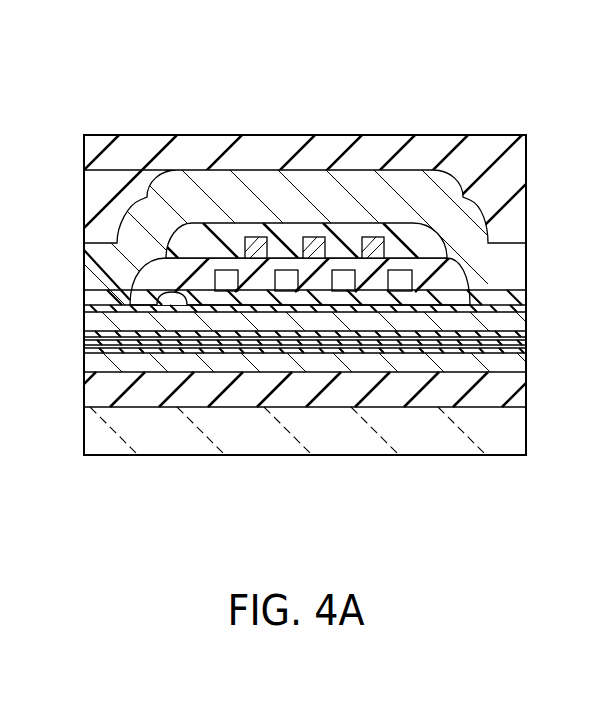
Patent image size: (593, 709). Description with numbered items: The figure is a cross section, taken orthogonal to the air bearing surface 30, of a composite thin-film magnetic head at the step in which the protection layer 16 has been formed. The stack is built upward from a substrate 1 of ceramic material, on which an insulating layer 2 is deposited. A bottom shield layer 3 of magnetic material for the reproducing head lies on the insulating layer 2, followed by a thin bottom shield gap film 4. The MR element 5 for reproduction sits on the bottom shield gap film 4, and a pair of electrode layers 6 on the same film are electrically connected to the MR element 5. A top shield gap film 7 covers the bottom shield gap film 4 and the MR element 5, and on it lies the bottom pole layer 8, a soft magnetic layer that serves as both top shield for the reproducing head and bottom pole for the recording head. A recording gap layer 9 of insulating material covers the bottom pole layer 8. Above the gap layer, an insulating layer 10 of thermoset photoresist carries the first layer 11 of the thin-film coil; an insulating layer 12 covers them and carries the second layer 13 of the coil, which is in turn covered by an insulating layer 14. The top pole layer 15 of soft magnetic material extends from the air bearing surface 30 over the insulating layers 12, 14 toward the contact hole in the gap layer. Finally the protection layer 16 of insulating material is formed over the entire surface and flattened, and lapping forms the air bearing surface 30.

The substrate 1 is at (407, 440).
The insulating layer 2 is at (440, 400).
The bottom shield layer 3 is at (492, 367).
The bottom shield gap film 4 is at (317, 350).
The MR element 5 is at (101, 353).
The electrode layers 6 is at (282, 342).
The top shield gap film 7 is at (238, 334).
The bottom pole layer 8 is at (184, 320).
The recording gap layer 9 is at (99, 300).
The insulating layer 10 is at (176, 293).
The first layer of the thin-film coil 11 is at (398, 268).
The insulating layer 12 is at (217, 263).
The second layer of the thin-film coil 13 is at (324, 240).
The insulating layer 14 is at (276, 223).
The top pole layer 15 is at (367, 190).
The protection layer 16 is at (455, 142).
The air bearing surface 30 is at (78, 283).